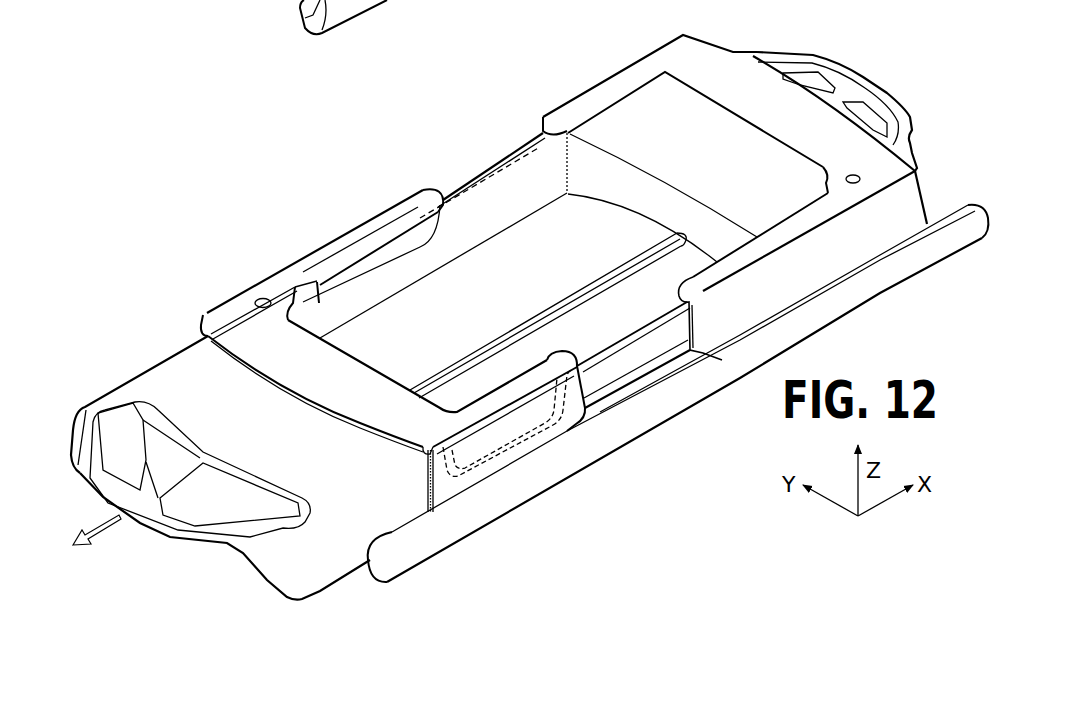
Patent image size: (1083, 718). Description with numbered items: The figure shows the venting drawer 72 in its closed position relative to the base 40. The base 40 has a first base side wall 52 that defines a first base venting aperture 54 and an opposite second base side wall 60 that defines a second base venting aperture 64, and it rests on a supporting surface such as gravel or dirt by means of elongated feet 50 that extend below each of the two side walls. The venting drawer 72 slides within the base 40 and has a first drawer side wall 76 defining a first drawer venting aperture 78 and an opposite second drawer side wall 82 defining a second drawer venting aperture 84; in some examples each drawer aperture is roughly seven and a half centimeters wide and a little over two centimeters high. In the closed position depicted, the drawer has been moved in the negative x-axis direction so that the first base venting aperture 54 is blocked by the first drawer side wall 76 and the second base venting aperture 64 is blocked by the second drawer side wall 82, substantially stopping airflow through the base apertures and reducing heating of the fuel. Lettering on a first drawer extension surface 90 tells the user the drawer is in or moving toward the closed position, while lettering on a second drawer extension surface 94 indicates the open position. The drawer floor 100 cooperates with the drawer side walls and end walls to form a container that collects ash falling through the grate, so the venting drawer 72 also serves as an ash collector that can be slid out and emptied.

The base 40 is at (612, 68).
The elongated feet 50 is at (608, 456).
The first base side wall 52 is at (822, 275).
The first base venting aperture 54 is at (638, 362).
The second base side wall 60 is at (542, 130).
The second base venting aperture 64 is at (487, 172).
The venting drawer 72 is at (150, 362).
The first drawer side wall 76 is at (640, 322).
The first drawer venting aperture 78 is at (499, 430).
The second drawer side wall 82 is at (458, 183).
The second drawer venting aperture 84 is at (374, 262).
The first drawer extension surface 90 is at (265, 427).
The second drawer extension surface 94 is at (732, 171).
The drawer floor 100 is at (503, 311).